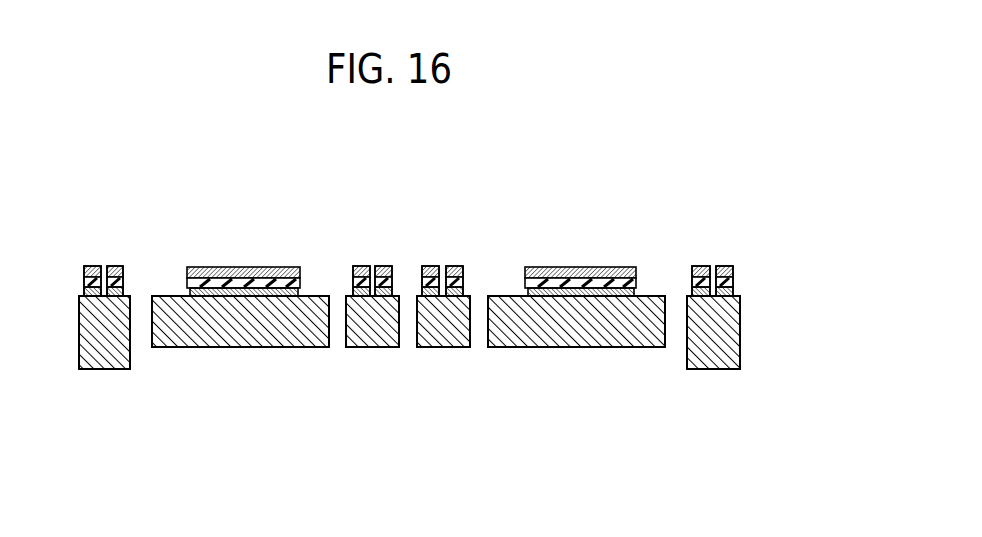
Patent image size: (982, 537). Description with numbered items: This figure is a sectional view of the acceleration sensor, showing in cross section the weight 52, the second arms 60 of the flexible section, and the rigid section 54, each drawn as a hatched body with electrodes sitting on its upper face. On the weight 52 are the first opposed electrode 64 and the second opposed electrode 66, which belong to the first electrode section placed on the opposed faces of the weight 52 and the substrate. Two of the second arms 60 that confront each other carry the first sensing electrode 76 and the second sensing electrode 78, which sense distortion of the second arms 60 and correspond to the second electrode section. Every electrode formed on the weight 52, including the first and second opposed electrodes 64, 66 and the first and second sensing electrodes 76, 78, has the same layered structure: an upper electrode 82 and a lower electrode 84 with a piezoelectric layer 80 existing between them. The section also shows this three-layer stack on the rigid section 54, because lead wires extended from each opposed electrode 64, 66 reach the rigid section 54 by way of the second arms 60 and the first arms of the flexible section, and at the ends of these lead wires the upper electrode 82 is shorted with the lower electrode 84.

The weight 52 is at (265, 328).
The rigid section 54 is at (110, 360).
The second arms 60 is at (408, 363).
The first opposed electrode 64 is at (180, 258).
The second opposed electrode 66 is at (518, 258).
The first sensing electrode 76 is at (394, 258).
The second sensing electrode 78 is at (465, 258).
The piezoelectric layer 80 is at (733, 282).
The upper electrode 82 is at (733, 266).
The lower electrode 84 is at (733, 292).